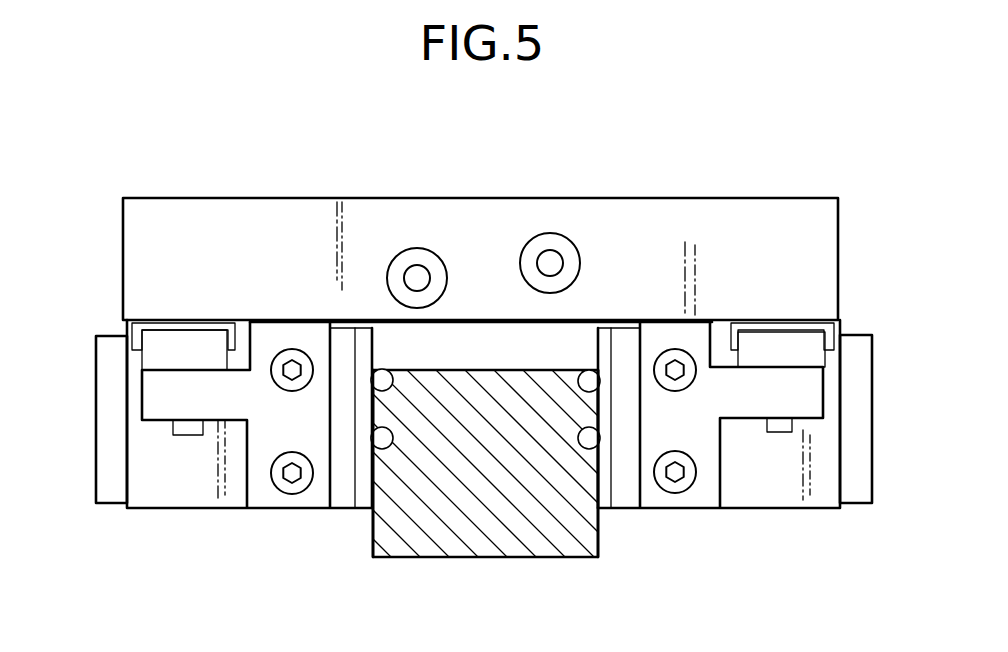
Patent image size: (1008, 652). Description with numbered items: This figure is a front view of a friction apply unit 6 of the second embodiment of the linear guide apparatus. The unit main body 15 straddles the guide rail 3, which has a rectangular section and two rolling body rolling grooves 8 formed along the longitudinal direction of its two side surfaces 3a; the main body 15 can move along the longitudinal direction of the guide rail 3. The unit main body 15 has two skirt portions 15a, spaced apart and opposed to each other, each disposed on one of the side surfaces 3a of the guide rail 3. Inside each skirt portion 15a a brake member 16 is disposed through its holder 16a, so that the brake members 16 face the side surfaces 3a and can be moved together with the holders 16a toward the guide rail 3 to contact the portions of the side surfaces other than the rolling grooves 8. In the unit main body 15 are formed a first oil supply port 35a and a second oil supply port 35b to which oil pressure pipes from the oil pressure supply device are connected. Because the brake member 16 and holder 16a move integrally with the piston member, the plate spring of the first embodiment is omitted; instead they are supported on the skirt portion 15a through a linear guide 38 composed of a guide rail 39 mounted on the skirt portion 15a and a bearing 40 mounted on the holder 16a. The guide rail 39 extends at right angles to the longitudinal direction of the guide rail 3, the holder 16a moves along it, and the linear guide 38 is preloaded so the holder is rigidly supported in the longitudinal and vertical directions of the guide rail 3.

The friction apply unit 6 is at (481, 359).
The unit main body 15 is at (637, 198).
The skirt portion 15a is at (170, 495).
The first oil supply port 35a is at (418, 275).
The second oil supply port 35b is at (550, 262).
The linear guide 38 is at (128, 360).
The guide rail 39 is at (228, 340).
The bearing 40 is at (172, 348).
The brake member 16 is at (363, 502).
The holder 16a is at (330, 512).
The guide rail 3 is at (492, 558).
The side surface 3a is at (363, 470).
The rolling body rolling groove 8 is at (386, 371).